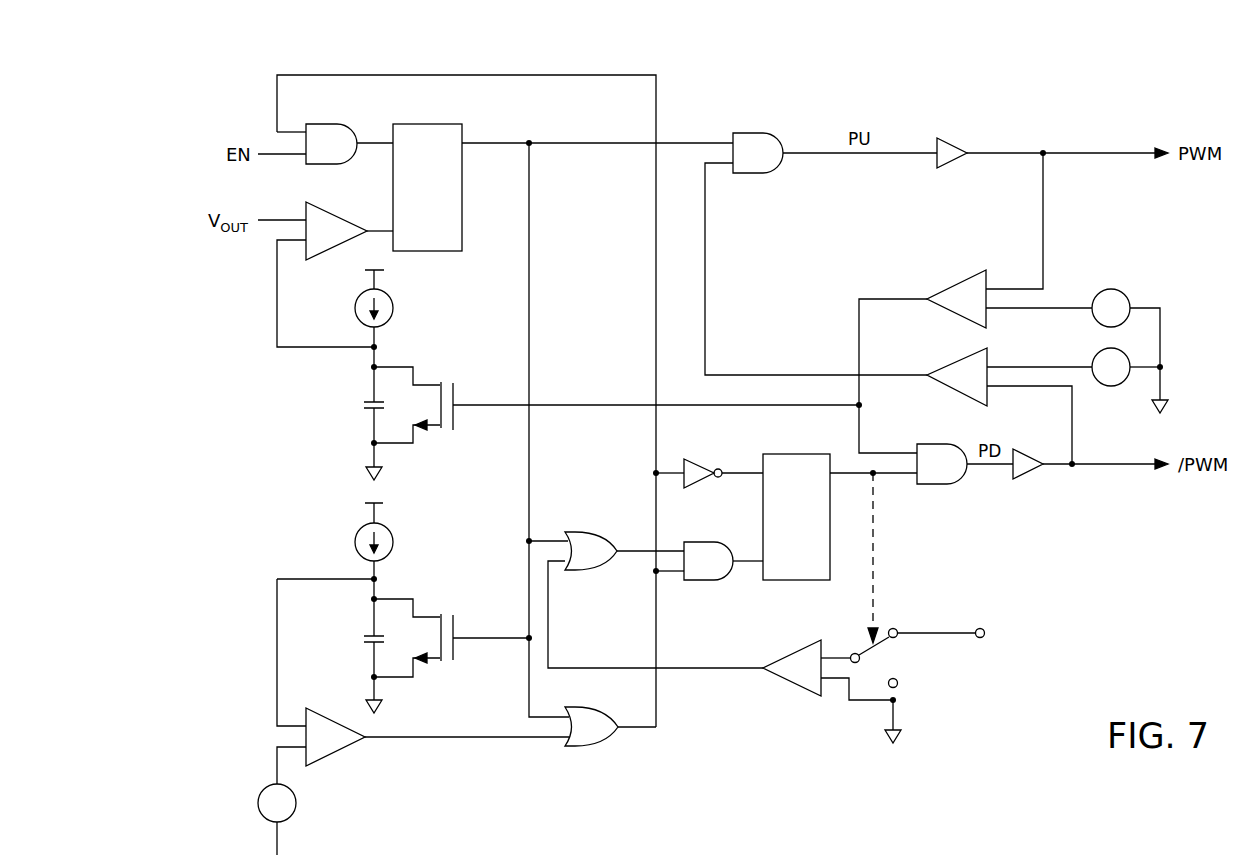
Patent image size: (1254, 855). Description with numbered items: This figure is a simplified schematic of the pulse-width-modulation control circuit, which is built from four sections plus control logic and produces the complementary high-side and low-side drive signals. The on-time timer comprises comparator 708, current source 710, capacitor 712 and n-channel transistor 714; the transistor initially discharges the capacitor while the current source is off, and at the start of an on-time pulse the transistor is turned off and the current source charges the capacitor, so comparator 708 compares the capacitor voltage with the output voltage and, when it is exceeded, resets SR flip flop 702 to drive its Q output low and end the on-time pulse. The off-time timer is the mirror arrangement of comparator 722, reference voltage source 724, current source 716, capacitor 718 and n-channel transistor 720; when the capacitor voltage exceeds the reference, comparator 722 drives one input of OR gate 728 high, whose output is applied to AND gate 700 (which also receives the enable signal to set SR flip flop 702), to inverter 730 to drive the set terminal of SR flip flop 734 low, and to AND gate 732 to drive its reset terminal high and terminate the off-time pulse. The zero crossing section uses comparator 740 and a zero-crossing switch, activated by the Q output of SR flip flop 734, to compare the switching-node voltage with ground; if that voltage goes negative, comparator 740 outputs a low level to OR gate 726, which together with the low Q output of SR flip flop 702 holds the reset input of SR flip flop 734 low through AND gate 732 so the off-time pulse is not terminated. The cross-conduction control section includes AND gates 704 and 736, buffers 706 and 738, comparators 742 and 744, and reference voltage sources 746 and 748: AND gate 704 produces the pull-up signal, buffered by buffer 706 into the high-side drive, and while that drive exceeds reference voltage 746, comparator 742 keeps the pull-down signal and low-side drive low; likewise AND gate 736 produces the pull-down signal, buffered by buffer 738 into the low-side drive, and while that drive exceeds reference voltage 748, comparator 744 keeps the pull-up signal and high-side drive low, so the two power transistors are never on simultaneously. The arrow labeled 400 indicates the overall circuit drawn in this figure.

The AND gate 700 is at (342, 123).
The SR flip flop 702 is at (427, 252).
The AND gate 704 is at (752, 132).
The buffer 706 is at (953, 145).
The comparator 708 is at (342, 219).
The current source 710 is at (352, 308).
The capacitor 712 is at (363, 403).
The n-channel transistor 714 is at (455, 394).
The current source 716 is at (353, 541).
The capacitor 718 is at (365, 638).
The n-channel transistor 720 is at (457, 652).
The comparator 722 is at (337, 753).
The reference voltage source 724 is at (258, 802).
The OR gate 726 is at (587, 572).
The OR gate 728 is at (588, 748).
The inverter 730 is at (712, 462).
The AND gate 732 is at (700, 583).
The SR flip flop 734 is at (795, 583).
The AND gate 736 is at (937, 486).
The buffer 738 is at (1032, 478).
The comparator 740 is at (787, 687).
The comparator 742 is at (955, 282).
The comparator 744 is at (950, 395).
The reference voltage source 746 is at (1110, 288).
The reference voltage source 748 is at (1110, 388).
The zero-crossing switch 400 is at (960, 684).